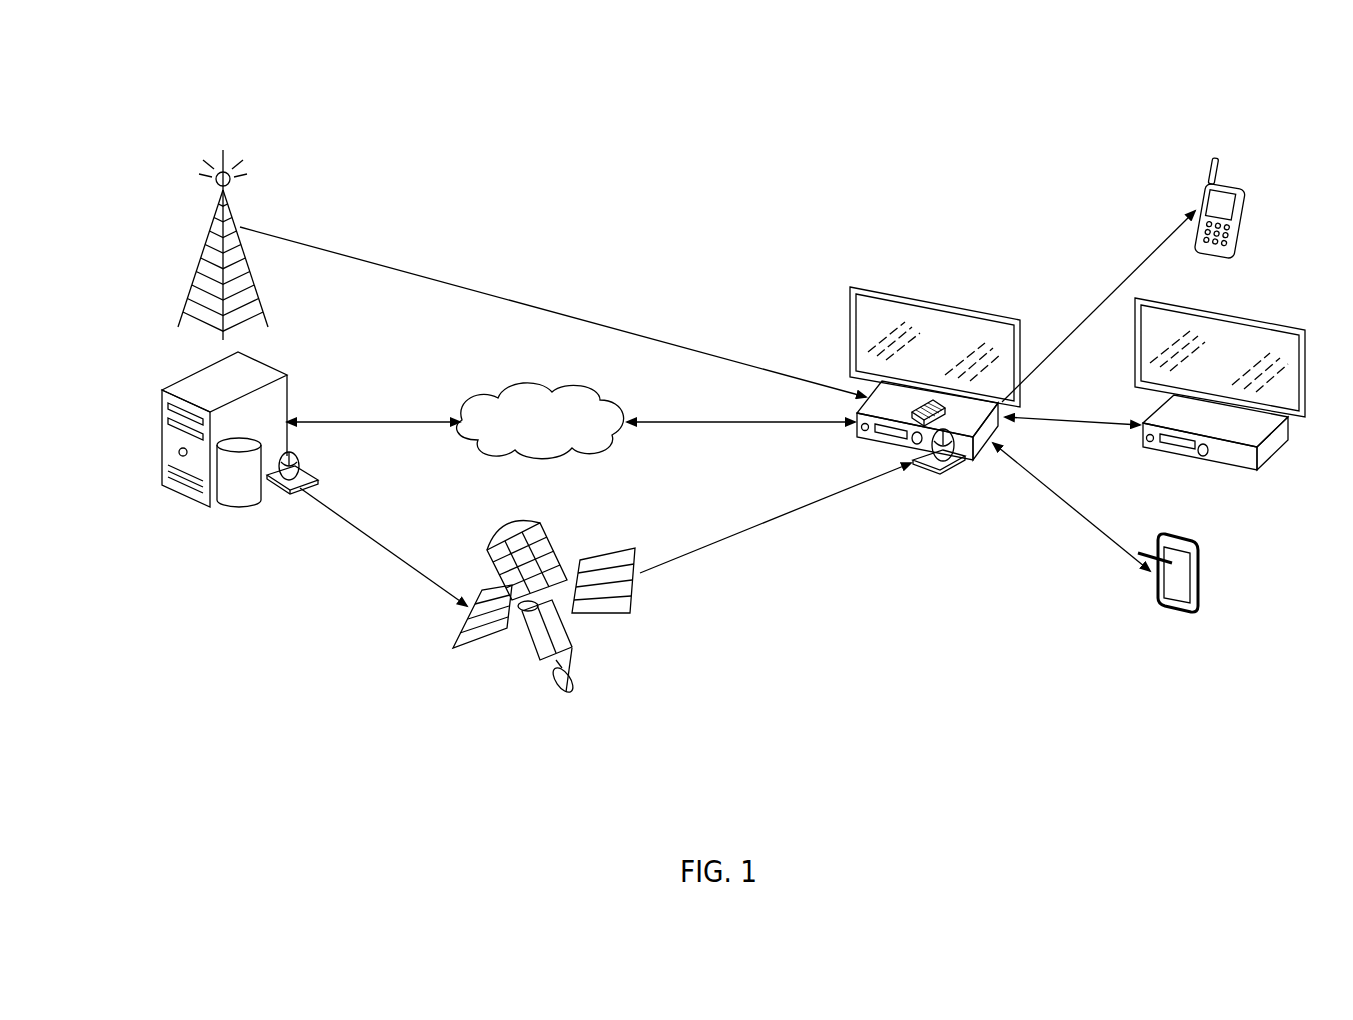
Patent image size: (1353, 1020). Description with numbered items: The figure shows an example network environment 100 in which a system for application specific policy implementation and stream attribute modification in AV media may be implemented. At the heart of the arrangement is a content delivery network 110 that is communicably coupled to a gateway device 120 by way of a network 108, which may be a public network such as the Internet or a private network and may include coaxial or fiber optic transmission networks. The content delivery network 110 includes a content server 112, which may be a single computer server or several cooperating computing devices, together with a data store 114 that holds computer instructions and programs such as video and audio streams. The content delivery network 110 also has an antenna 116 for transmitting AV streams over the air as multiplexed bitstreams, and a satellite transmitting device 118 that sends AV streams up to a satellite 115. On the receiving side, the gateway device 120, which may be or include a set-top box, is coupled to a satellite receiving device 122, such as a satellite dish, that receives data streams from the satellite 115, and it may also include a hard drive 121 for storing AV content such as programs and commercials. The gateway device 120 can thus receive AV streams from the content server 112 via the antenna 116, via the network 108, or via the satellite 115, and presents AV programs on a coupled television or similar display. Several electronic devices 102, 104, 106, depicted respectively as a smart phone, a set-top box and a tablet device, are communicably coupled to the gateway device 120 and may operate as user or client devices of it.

The network environment 100 is at (965, 144).
The electronic device 102 is at (1248, 218).
The electronic device 104 is at (1275, 441).
The electronic device 106 is at (1200, 546).
The network 108 is at (570, 455).
The content delivery network (CDN) 110 is at (136, 521).
The content server 112 is at (162, 427).
The data store 114 is at (247, 497).
The satellite 115 is at (593, 632).
The antenna 116 is at (198, 260).
The satellite transmitting device 118 is at (303, 463).
The gateway device 120 is at (992, 432).
The hard drive 121 is at (912, 412).
The satellite receiving device 122 is at (935, 470).